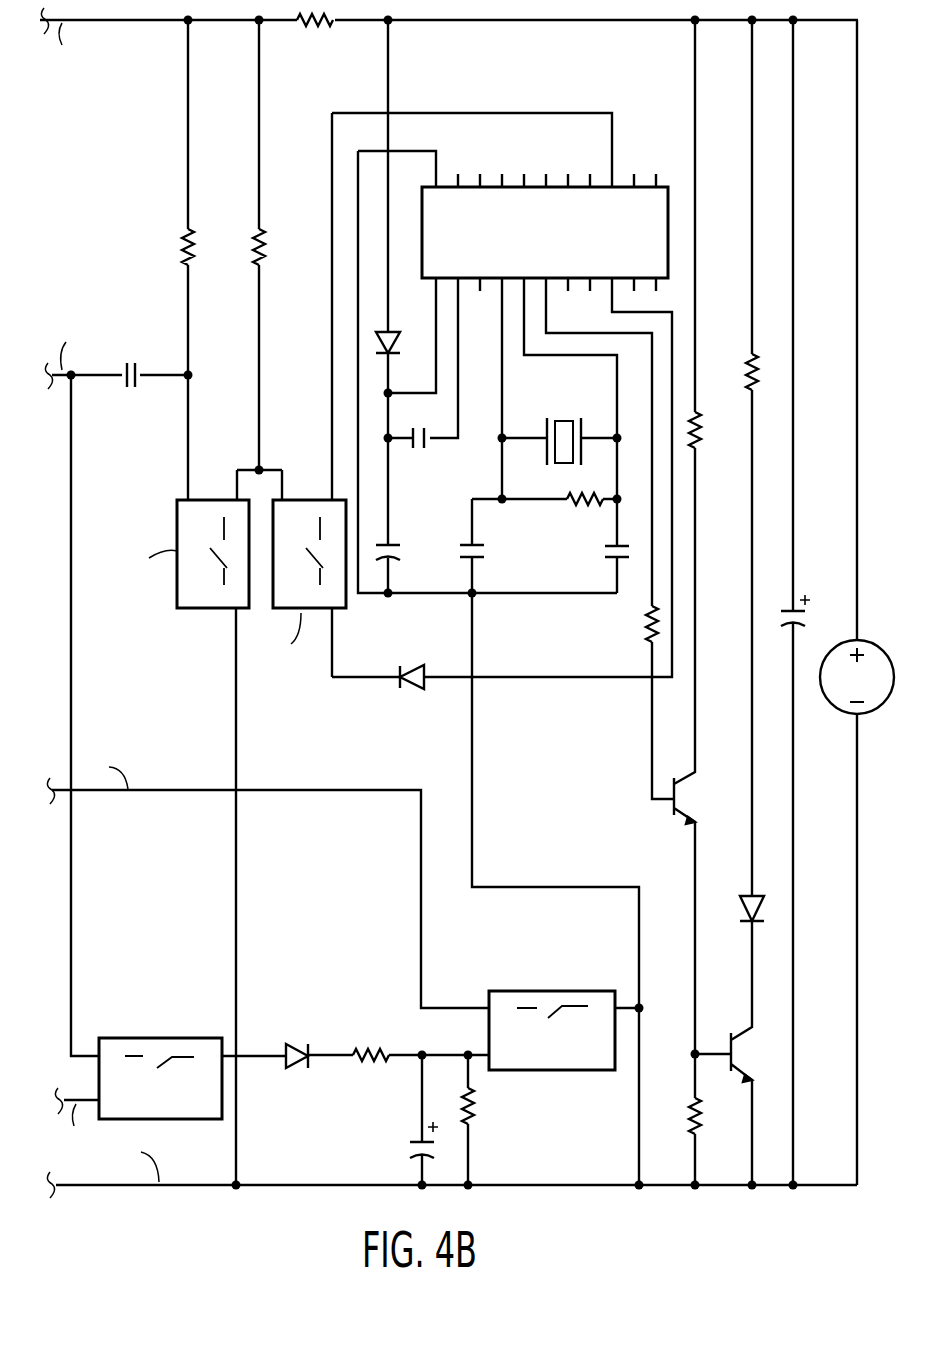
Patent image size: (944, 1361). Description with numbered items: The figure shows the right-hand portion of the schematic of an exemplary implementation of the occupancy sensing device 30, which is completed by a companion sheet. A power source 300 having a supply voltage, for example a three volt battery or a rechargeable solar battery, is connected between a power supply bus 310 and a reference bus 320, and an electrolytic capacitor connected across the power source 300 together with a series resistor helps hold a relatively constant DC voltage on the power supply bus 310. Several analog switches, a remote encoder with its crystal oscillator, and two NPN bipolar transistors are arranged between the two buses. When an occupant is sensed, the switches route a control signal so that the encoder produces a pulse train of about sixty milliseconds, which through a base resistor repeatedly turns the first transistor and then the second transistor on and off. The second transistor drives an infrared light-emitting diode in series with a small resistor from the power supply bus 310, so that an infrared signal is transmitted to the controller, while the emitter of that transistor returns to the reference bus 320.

The occupancy sensing device 30 is at (666, 1203).
The power supply bus 310 is at (587, 23).
The reference bus 320 is at (319, 1180).
The power source 300 is at (830, 703).